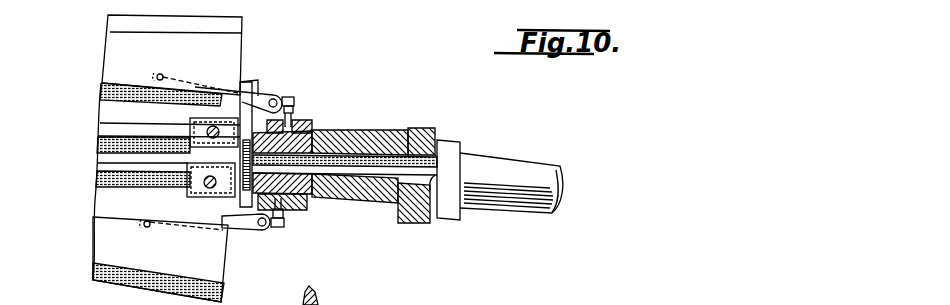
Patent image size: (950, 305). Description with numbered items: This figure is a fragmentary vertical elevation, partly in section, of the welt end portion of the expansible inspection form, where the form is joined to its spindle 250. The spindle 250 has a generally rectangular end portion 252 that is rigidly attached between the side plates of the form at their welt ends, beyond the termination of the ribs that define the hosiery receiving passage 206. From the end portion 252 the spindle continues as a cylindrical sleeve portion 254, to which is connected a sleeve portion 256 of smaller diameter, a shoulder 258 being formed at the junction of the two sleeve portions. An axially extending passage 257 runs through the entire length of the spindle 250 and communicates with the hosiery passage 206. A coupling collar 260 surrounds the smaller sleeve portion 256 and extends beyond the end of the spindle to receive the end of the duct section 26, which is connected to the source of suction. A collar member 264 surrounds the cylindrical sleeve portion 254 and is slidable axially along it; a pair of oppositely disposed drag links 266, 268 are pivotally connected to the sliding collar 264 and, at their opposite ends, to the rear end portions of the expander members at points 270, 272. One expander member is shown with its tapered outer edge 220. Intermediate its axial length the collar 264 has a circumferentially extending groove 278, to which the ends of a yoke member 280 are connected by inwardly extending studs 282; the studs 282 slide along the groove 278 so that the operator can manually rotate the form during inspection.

The duct section 26 is at (483, 157).
The hosiery receiving passage 206 is at (93, 150).
The tapered outer edge of expander member 220 is at (330, 298).
The spindle 250 is at (248, 97).
The end portion of spindle 252 is at (186, 188).
The cylindrical sleeve portion 254 is at (238, 201).
The sleeve portion of smaller diameter 256 is at (380, 130).
The axially extending passage 257 is at (370, 185).
The shoulder 258 is at (323, 133).
The coupling collar 260 is at (405, 130).
The collar member 264 is at (303, 123).
The drag link 266 is at (252, 113).
The drag link 268 is at (250, 231).
The pivot point 270 is at (186, 50).
The pivot point 272 is at (146, 227).
The circumferentially extending groove 278 is at (290, 212).
The yoke member 280 is at (298, 110).
The studs 282 is at (290, 96).